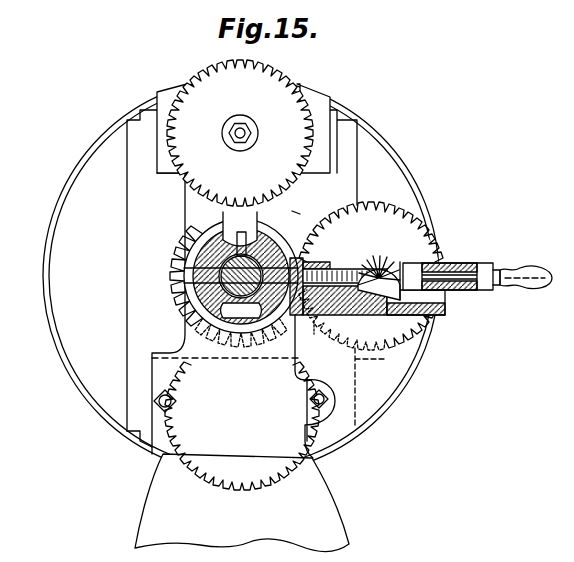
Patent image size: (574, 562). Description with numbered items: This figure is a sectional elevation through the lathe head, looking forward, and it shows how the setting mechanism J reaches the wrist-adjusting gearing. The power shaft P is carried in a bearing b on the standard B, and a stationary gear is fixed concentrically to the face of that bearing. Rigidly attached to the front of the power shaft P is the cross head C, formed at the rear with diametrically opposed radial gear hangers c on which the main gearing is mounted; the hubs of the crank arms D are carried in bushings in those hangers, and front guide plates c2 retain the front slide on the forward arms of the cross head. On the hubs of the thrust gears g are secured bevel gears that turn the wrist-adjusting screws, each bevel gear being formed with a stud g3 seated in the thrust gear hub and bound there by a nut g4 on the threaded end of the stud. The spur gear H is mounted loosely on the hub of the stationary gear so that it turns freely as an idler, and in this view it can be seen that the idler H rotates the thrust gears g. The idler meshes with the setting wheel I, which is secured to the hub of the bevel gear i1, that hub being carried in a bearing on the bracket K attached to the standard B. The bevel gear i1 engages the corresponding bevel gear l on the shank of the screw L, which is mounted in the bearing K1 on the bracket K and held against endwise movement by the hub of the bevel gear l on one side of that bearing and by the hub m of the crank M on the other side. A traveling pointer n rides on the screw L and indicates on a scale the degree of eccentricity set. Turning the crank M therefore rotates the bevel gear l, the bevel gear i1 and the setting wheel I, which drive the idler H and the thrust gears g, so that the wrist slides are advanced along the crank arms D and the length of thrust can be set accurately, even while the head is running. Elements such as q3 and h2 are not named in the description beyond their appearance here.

The front guide plate c2 is at (422, 181).
The standard B is at (272, 508).
The frame plate q3 is at (235, 284).
The crank arm D is at (243, 128).
The setting mechanism J is at (380, 276).
The bracket K is at (369, 388).
The thrust gear g is at (221, 494).
The stud g3 is at (234, 158).
The nut g4 is at (240, 150).
The gear hanger c is at (226, 236).
The power shaft P is at (187, 301).
The bearing b is at (183, 240).
The cross head C is at (289, 209).
The spur gear H is at (304, 210).
The housing strip h2 is at (310, 253).
The bearing K1 is at (462, 299).
The traveling pointer n is at (326, 260).
The bevel gear i1 is at (379, 270).
The setting wheel I is at (386, 256).
The bevel gear l is at (394, 264).
The hub of the crank m is at (490, 266).
The crank M is at (526, 265).
The screw L is at (342, 320).